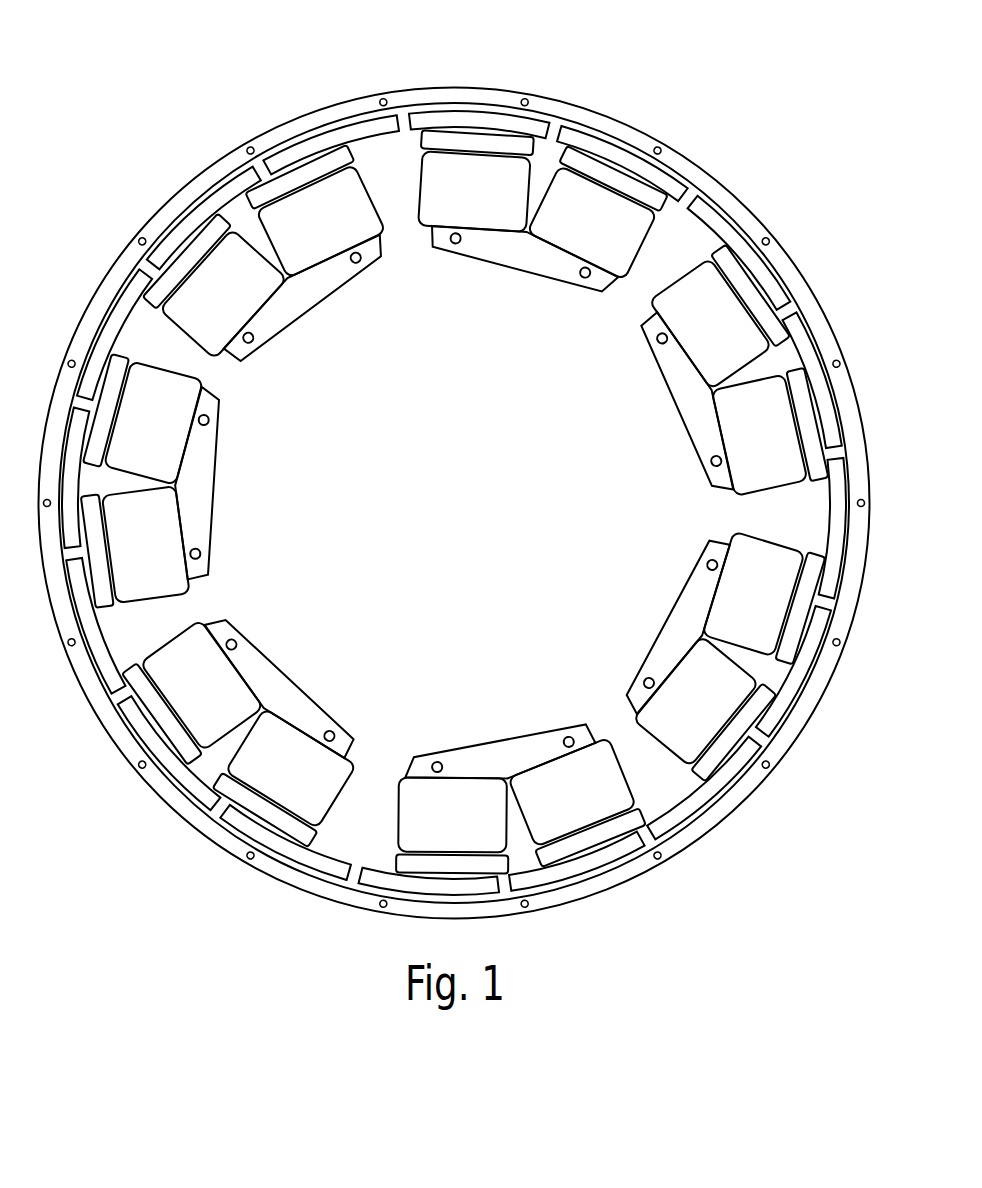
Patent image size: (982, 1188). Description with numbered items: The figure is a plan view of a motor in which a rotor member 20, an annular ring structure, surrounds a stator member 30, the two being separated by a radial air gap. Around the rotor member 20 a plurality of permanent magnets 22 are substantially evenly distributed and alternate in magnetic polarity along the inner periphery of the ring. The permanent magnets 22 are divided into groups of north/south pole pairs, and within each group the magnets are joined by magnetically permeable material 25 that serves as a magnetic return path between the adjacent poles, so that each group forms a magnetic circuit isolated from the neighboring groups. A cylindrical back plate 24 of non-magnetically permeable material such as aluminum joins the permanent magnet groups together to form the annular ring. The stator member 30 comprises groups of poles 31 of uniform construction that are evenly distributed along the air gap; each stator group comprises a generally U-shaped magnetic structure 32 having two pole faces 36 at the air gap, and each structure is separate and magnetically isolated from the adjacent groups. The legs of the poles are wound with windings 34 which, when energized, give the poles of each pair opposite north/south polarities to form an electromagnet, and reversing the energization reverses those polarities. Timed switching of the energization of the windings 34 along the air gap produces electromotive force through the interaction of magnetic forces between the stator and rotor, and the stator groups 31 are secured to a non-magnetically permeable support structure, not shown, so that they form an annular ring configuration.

The rotor member 20 is at (856, 354).
The permanent magnets 22 is at (710, 210).
The cylindrical back plate 24 is at (633, 138).
The magnetically permeable material 25 is at (754, 210).
The stator member 30 is at (461, 469).
The groups of poles 31 is at (427, 230).
The U-shaped magnetic structure 32 is at (518, 270).
The windings 34 is at (590, 240).
The pole faces 36 is at (453, 142).